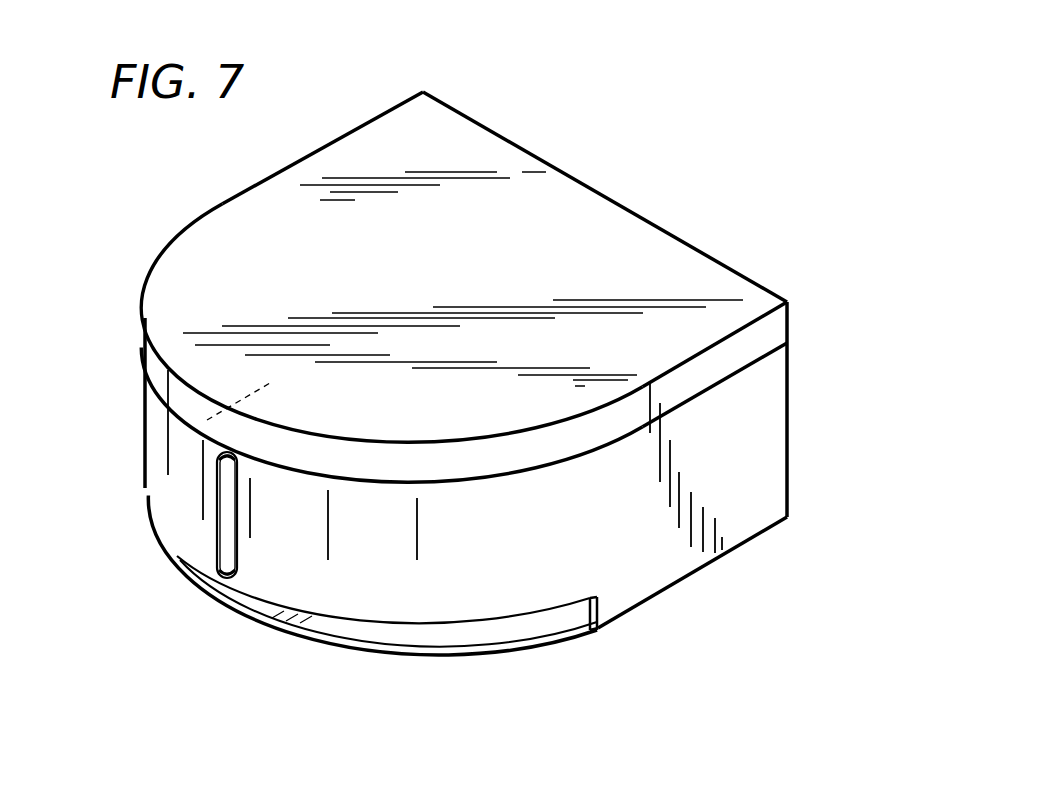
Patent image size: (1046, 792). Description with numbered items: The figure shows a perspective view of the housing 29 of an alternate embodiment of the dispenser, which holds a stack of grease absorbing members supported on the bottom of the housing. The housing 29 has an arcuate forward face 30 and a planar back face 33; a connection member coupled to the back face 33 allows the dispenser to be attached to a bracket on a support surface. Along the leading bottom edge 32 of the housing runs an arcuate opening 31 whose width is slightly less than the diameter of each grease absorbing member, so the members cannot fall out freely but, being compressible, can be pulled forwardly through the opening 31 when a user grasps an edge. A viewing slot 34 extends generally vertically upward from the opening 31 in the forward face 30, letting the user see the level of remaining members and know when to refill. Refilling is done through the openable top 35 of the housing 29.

The housing 29 is at (423, 92).
The arcuate forward face 30 is at (267, 587).
The arcuate opening 31 is at (573, 620).
The leading bottom edge 32 is at (368, 653).
The planar back face 33 is at (610, 193).
The viewing slot 34 is at (214, 513).
The openable top 35 is at (773, 327).